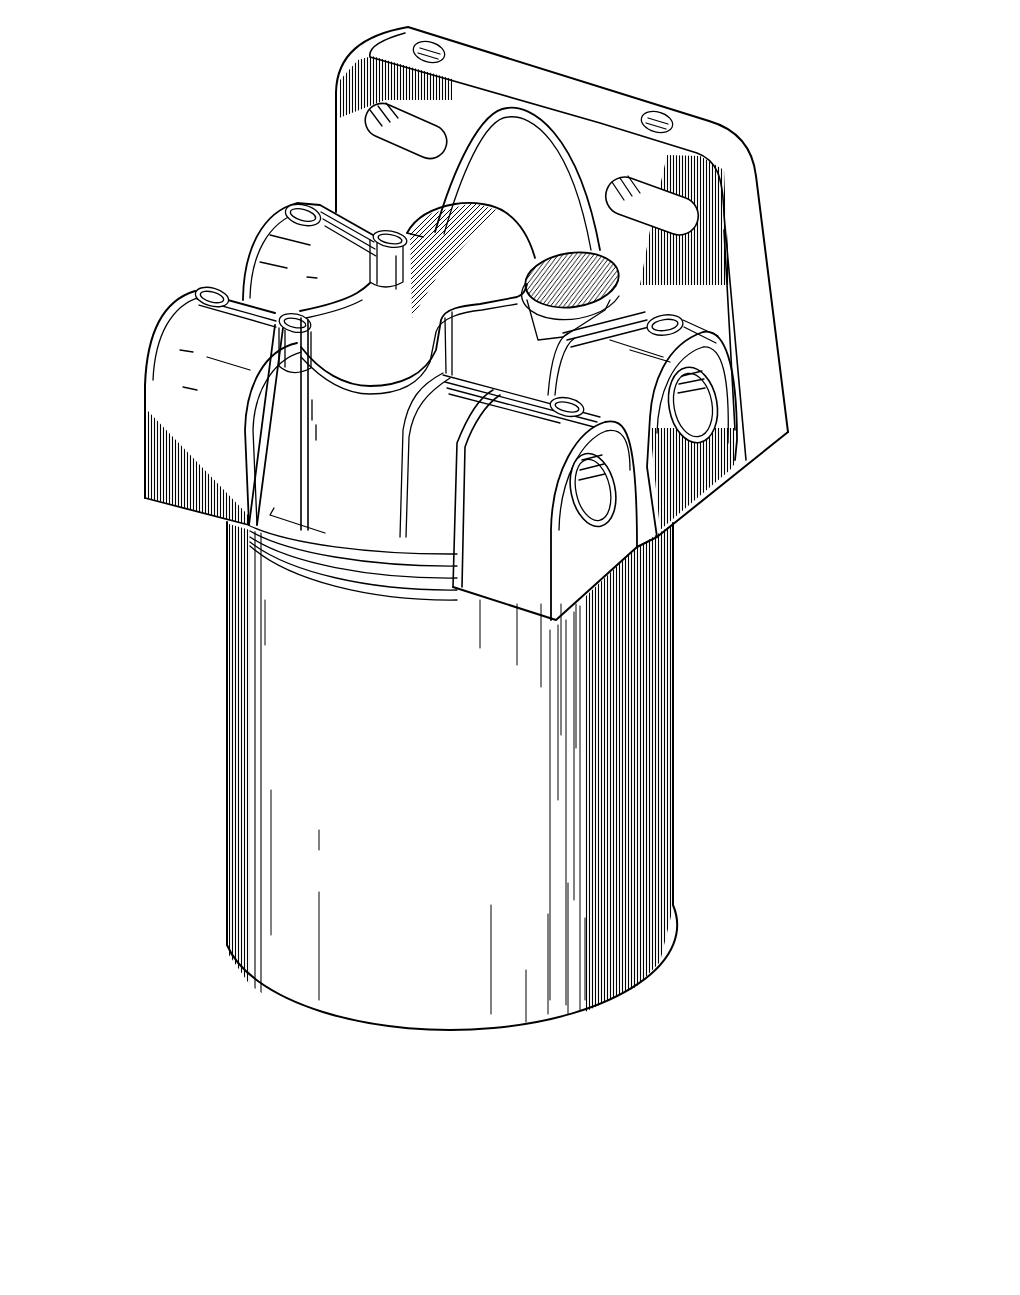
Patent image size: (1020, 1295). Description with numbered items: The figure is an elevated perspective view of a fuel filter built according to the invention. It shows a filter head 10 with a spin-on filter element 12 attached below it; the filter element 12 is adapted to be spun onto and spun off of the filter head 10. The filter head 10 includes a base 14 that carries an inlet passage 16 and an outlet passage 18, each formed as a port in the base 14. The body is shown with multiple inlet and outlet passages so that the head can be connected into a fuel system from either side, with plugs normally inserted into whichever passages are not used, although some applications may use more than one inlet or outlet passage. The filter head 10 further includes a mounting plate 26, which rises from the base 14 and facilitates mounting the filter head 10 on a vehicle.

The filter head 10 is at (106, 232).
The spin-on filter element 12 is at (679, 805).
The base 14 is at (138, 472).
The inlet passage 16 is at (143, 410).
The outlet passage 18 is at (343, 213).
The mounting plate 26 is at (758, 285).